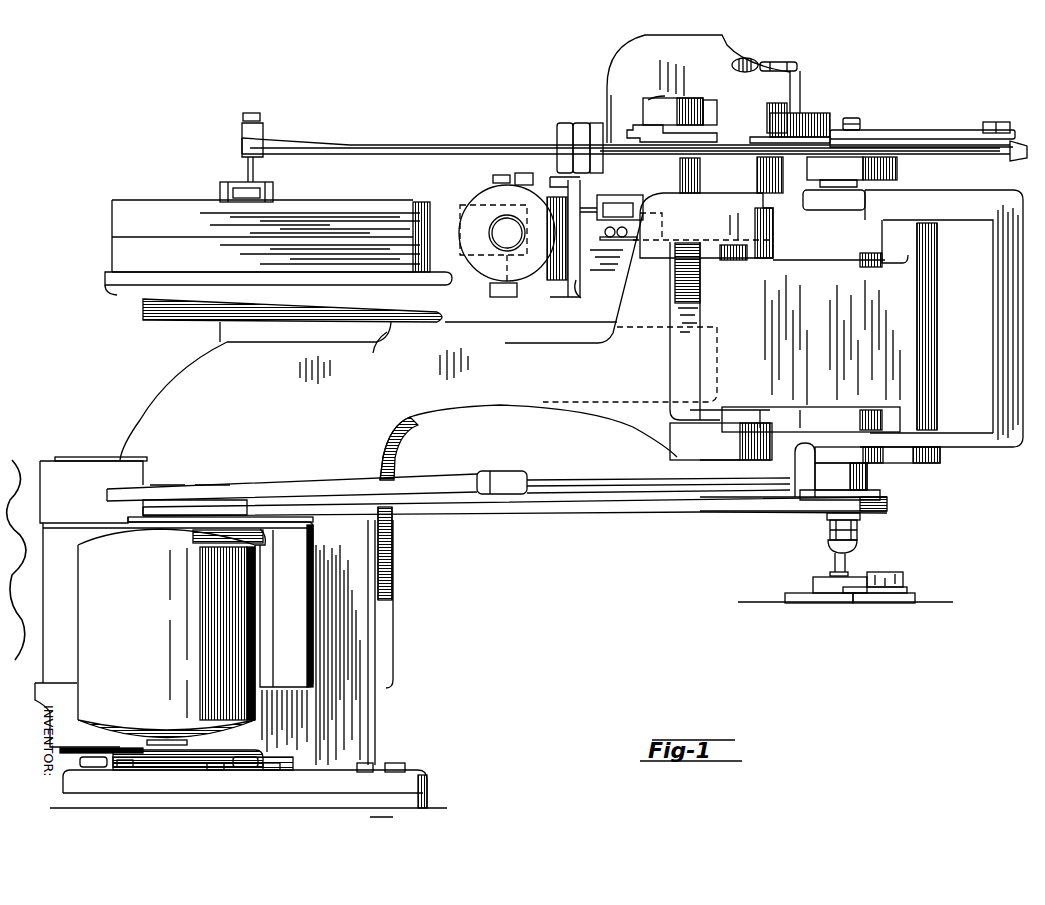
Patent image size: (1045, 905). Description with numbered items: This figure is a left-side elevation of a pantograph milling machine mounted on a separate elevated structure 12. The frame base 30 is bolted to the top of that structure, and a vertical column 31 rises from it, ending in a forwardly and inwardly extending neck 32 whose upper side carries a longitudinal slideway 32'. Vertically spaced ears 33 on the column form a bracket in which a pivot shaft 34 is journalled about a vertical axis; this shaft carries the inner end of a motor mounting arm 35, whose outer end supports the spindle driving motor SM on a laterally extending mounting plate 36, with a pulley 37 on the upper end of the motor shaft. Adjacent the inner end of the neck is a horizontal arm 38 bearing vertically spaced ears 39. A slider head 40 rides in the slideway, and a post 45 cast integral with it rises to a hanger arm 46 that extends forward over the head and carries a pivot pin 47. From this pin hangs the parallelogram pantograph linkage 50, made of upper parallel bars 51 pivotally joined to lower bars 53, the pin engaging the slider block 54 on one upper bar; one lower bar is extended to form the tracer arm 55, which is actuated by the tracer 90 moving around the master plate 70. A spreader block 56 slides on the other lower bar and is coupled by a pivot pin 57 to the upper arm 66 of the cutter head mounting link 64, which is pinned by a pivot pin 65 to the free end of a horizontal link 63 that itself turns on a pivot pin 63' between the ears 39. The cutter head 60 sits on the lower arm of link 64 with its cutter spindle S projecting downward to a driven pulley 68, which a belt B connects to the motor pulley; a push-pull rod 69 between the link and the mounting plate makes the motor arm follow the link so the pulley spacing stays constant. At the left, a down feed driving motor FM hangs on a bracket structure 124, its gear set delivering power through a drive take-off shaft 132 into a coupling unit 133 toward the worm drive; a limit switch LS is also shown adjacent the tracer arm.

The elevated structure 12 is at (407, 803).
The base 30 is at (397, 783).
The column 31 is at (360, 723).
The neck 32 is at (361, 372).
The slideway 32' is at (389, 348).
The ears 33 is at (42, 477).
The pivot shaft 34 is at (73, 459).
The motor mounting arm 35 is at (287, 562).
The mounting plate 36 is at (128, 518).
The pulley 37 is at (133, 487).
The arm 38 is at (557, 403).
The ears 39 is at (710, 228).
The slider head 40 is at (142, 296).
The post 45 is at (608, 94).
The hanger arm 46 is at (715, 68).
The pivot pin 47 is at (790, 58).
The pantograph linkage 50 is at (910, 126).
The upper parallel bars 51 is at (640, 130).
The lower bars 53 is at (940, 158).
The slider block 54 is at (818, 124).
The tracer arm 55 is at (355, 148).
The spreader block 56 is at (893, 172).
The pivot pin 57 is at (857, 119).
The cutter head 60 is at (822, 420).
The horizontal link 63 is at (700, 331).
The pivot pin 63' is at (720, 500).
The cutter head mounting link 64 is at (970, 417).
The pivot pin 65 is at (907, 467).
The upper arm 66 is at (825, 200).
The driven pulley 68 is at (810, 510).
The push-pull rod 69 is at (302, 483).
The master plate 70 is at (130, 213).
The tracer 90 is at (229, 170).
The bracket structure 124 is at (589, 297).
The drive take-off shaft 132 is at (653, 205).
The coupling unit 133 is at (605, 197).
The belt B is at (577, 506).
The down feed driving motor FM is at (466, 188).
The limit switch LS is at (550, 128).
The cutter spindle S is at (866, 541).
The spindle driving motor SM is at (131, 596).